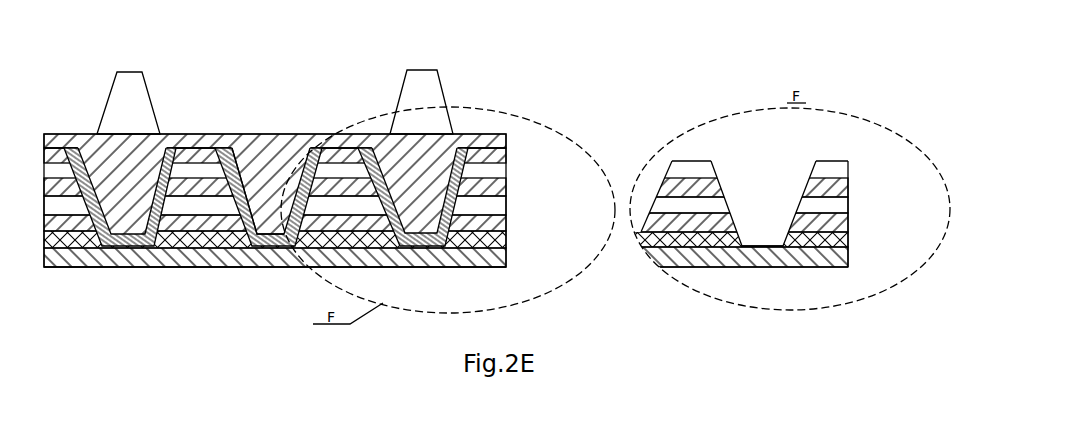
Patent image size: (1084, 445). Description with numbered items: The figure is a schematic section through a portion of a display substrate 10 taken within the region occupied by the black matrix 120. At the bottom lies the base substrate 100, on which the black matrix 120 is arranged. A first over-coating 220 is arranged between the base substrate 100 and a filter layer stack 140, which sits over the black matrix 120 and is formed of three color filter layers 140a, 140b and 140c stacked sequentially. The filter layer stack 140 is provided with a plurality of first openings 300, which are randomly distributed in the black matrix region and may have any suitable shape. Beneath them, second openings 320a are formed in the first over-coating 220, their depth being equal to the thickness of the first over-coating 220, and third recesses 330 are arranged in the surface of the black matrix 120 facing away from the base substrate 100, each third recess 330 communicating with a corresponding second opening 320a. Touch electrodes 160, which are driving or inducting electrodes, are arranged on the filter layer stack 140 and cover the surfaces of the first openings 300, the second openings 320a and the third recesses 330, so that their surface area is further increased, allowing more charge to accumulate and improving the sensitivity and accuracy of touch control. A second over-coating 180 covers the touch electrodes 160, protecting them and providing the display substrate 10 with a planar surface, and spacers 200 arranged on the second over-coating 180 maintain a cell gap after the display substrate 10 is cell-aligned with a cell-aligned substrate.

The display substrate 10 is at (555, 90).
The base substrate 100 is at (506, 268).
The black matrix 120 is at (506, 262).
The filter layer stack 140 is at (195, 170).
The color filter layer 140a is at (506, 215).
The color filter layer 140b is at (506, 198).
The color filter layer 140c is at (506, 180).
The touch electrodes 160 is at (507, 142).
The second over-coating 180 is at (506, 135).
The spacers 200 is at (137, 122).
The first over-coating 220 is at (506, 242).
The first openings 300 is at (426, 174).
The second openings 320a is at (277, 210).
The third recesses 330 is at (306, 148).